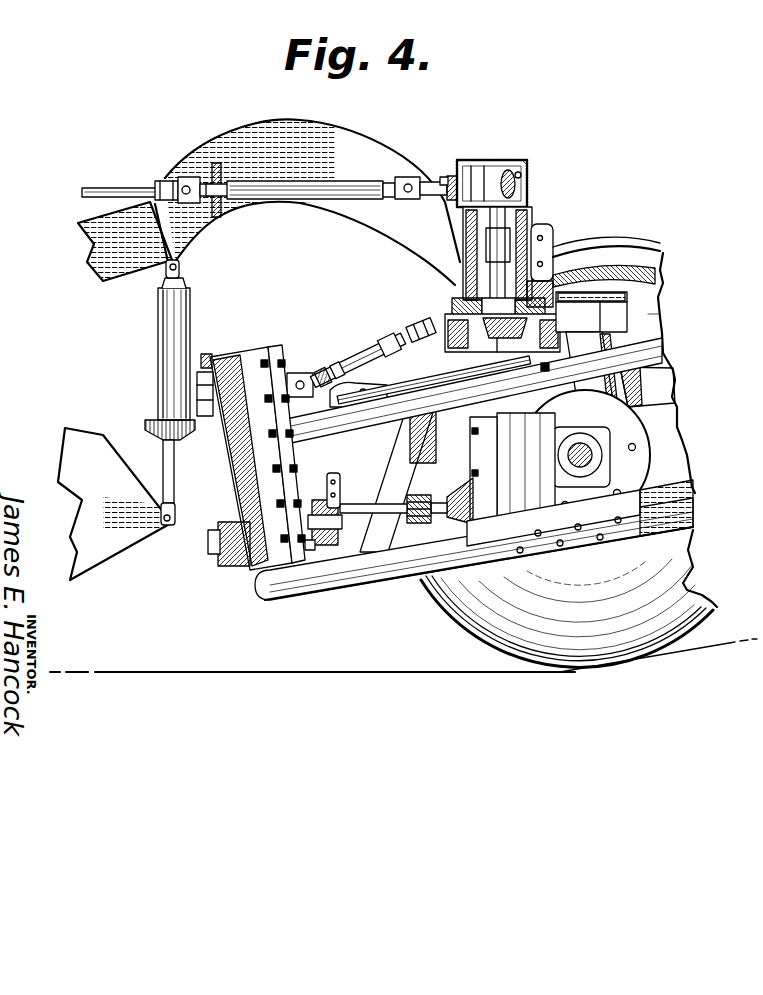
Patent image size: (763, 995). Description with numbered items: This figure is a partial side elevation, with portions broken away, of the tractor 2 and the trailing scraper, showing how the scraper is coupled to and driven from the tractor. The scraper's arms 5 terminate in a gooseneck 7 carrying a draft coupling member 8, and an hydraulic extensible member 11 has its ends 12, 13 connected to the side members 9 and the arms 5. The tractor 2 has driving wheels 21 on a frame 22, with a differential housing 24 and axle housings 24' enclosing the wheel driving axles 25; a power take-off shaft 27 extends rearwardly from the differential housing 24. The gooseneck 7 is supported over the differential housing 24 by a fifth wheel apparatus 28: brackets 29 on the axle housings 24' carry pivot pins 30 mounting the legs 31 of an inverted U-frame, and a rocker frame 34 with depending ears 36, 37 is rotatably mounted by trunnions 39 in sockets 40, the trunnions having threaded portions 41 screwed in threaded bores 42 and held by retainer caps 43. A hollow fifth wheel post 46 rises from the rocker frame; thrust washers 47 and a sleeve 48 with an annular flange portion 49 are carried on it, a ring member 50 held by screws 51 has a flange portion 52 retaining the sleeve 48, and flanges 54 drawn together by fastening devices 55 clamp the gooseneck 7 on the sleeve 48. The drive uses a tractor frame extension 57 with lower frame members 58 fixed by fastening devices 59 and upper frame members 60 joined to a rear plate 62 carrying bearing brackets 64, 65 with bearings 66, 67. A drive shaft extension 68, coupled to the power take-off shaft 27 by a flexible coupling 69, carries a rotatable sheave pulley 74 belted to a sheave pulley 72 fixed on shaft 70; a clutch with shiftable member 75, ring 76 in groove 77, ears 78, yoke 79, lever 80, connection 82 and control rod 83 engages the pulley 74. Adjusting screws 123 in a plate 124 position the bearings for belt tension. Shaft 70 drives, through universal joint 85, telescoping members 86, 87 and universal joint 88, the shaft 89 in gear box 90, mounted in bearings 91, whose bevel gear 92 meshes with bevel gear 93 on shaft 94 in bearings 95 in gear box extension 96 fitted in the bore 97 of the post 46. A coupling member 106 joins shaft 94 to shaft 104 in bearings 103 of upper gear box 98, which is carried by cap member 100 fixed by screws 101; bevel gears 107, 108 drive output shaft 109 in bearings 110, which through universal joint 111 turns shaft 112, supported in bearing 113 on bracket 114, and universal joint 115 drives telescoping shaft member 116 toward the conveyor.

The tractor 2 is at (697, 537).
The arms 5 is at (100, 283).
The gooseneck 7 is at (303, 122).
The draft coupling member 8 is at (553, 240).
The side members 9 is at (97, 552).
The hydraulic extensible member 11 is at (180, 325).
The end of extensible member 12 is at (175, 527).
The end of extensible member 13 is at (185, 270).
The driving wheels 21 is at (470, 618).
The tractor frame 22 is at (693, 500).
The differential housing 24 is at (512, 499).
The axle housings 24' is at (618, 455).
The wheel driving axles 25 is at (612, 452).
The power take-off shaft 27 is at (458, 490).
The fifth wheel apparatus 28 is at (565, 278).
The brackets 29 is at (672, 395).
The pivot pins 30 is at (636, 390).
The legs 31 is at (660, 356).
The rocker frame 34 is at (660, 270).
The depending ear 36 is at (663, 300).
The depending ear 37 is at (612, 268).
The trunnions 39 is at (608, 384).
The sockets 40 is at (665, 285).
The threaded portions 41 is at (612, 292).
The threaded bores 42 is at (563, 362).
The retainer caps 43 is at (662, 314).
The fifth wheel post 46 is at (463, 245).
The thrust washers 47 is at (476, 284).
The sleeve 48 is at (486, 245).
The annular flange portion 49 is at (588, 258).
The ring member 50 is at (530, 212).
The screws 51 is at (527, 200).
The annular flange portion 52 is at (466, 214).
The flanges 54 is at (560, 262).
The fastening devices 55 is at (556, 248).
The tractor frame extension 57 is at (318, 590).
The lower frame members 58 is at (425, 580).
The fastening devices 59 is at (600, 540).
The upper frame members 60 is at (275, 448).
The rear plate 62 is at (302, 373).
The bearing bracket 64 is at (300, 590).
The bearing bracket 65 is at (275, 345).
The bearing 66 is at (242, 568).
The bearing 67 is at (215, 420).
The drive shaft extension 68 is at (355, 504).
The flexible coupling 69 is at (418, 495).
The shaft 70 is at (197, 398).
The sheave pulley 72 is at (580, 364).
The sheave pulley 74 is at (252, 575).
The shiftable member 75 is at (322, 510).
The ring 76 is at (310, 552).
The groove 77 is at (352, 580).
The ears 78 is at (330, 535).
The yoke 79 is at (352, 480).
The lever 80 is at (327, 475).
The lever connection 82 is at (363, 383).
The control rod 83 is at (665, 330).
The universal joint 85 is at (322, 370).
The telescoping drive shaft member 86 is at (335, 368).
The telescoping drive shaft member 87 is at (384, 325).
The universal joint 88 is at (410, 323).
The shaft 89 is at (436, 385).
The gear box 90 is at (545, 371).
The bearings 91 is at (447, 322).
The bevel gear 92 is at (470, 345).
The bevel gear 93 is at (510, 338).
The shaft 94 is at (495, 340).
The bearings 95 is at (470, 297).
The gear box extension 96 is at (553, 250).
The bore 97 is at (540, 232).
The gear box 98 is at (527, 162).
The cap member 100 is at (540, 220).
The screws 101 is at (470, 222).
The bearings 103 is at (478, 232).
The shaft 104 is at (505, 170).
The coupling member 106 is at (470, 262).
The bevel gear 107 is at (520, 172).
The bevel gear 108 is at (473, 160).
The output shaft 109 is at (443, 177).
The bearings 110 is at (452, 176).
The universal joint 111 is at (408, 177).
The shaft 112 is at (352, 181).
The bearing 113 is at (195, 177).
The bracket 114 is at (220, 163).
The universal joint 115 is at (163, 181).
The telescoping shaft member 116 is at (96, 187).
The adjusting screws 123 is at (210, 354).
The plate 124 is at (265, 347).